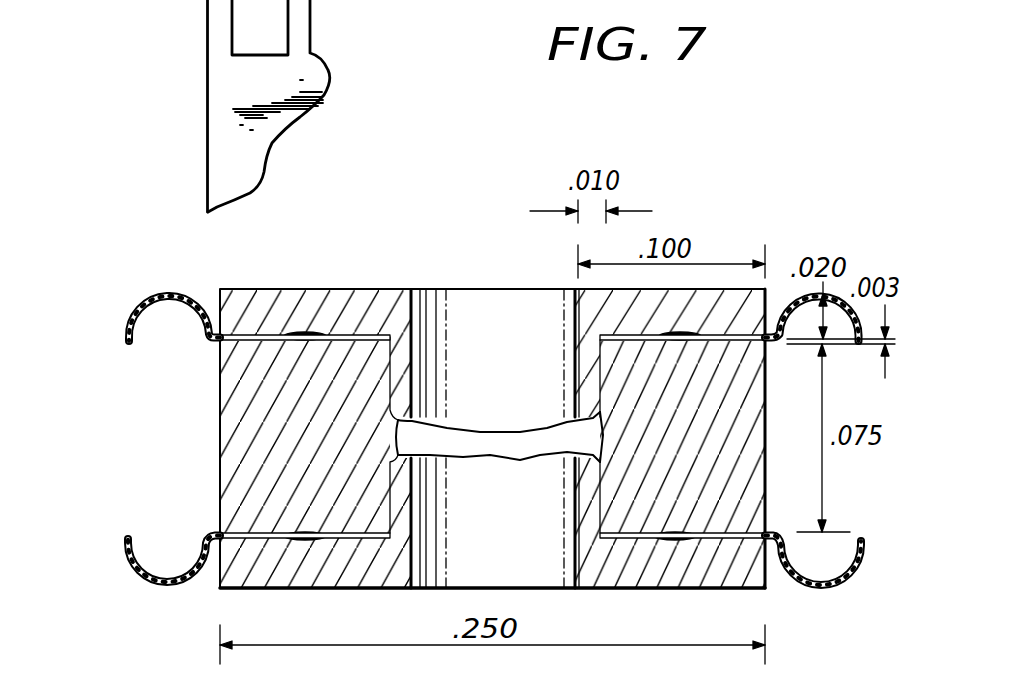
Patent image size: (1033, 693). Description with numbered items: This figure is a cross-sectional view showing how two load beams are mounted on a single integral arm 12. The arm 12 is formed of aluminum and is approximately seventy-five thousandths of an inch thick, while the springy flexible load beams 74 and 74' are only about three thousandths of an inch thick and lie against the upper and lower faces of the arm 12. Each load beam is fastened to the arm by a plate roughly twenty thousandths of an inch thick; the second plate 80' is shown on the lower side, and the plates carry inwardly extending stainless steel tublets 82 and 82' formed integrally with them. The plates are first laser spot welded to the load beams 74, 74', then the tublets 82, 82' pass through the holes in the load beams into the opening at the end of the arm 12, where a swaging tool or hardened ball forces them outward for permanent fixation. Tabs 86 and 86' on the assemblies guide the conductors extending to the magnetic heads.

The integral arm 12 is at (282, 438).
The load beam 74 is at (545, 365).
The load beam 74' is at (547, 512).
The plate 80' is at (523, 520).
The tublet 82 is at (496, 353).
The tublet 82' is at (496, 523).
The tab 86 is at (474, 324).
The tab 86' is at (456, 586).